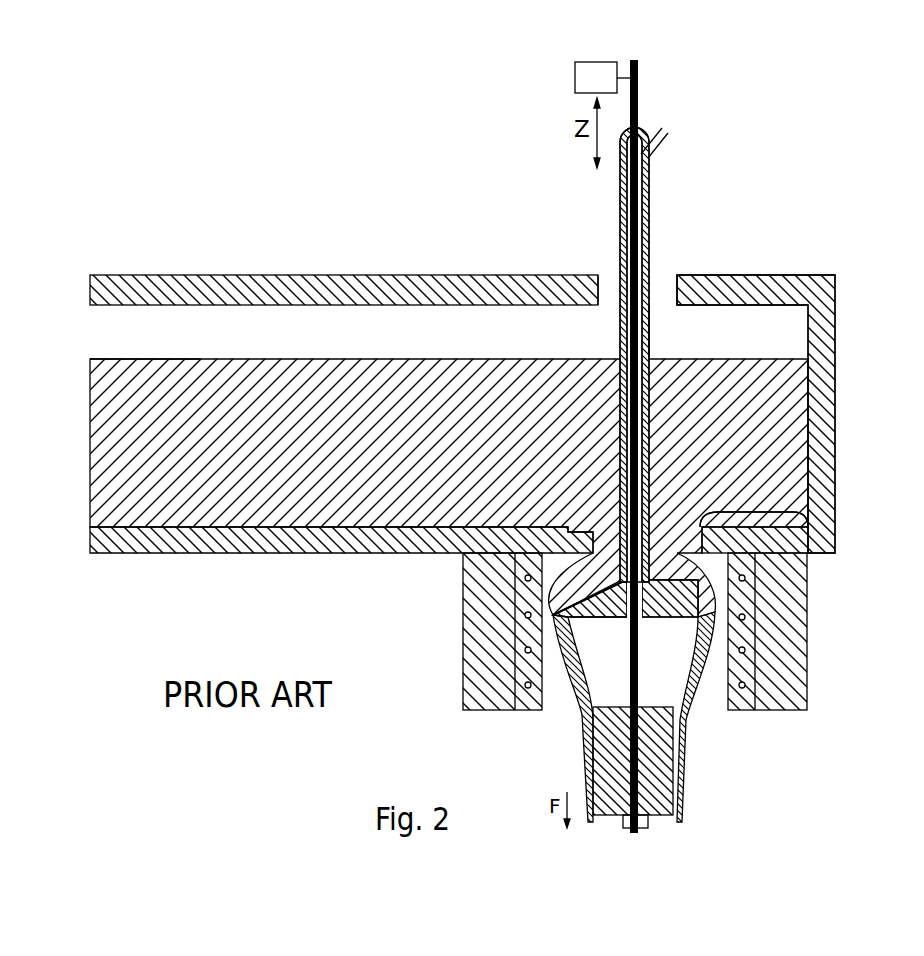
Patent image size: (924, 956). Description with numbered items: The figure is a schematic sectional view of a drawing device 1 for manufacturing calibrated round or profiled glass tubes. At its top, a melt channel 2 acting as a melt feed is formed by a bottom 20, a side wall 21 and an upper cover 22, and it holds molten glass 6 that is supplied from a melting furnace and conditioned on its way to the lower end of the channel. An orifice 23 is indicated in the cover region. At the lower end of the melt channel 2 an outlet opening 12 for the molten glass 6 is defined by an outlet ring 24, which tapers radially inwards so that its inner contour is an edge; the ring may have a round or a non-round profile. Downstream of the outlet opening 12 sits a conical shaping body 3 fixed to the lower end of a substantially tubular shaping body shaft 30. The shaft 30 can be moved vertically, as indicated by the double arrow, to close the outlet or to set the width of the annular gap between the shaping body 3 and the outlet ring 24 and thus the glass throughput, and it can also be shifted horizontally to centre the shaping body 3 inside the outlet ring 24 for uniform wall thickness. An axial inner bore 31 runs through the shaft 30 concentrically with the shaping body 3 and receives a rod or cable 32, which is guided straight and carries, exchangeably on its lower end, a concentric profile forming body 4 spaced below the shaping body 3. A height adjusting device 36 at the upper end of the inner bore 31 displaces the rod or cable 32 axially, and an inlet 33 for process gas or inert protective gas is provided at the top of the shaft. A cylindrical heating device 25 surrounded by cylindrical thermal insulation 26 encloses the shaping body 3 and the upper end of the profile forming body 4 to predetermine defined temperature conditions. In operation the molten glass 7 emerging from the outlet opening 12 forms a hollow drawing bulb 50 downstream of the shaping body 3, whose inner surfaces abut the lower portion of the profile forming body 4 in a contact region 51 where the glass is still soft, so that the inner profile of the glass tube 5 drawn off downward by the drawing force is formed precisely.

The drawing device 1 is at (842, 192).
The melt channel 2 is at (107, 349).
The shaping body 3 is at (703, 610).
The profile forming body 4 is at (683, 742).
The glass tube 5 is at (683, 822).
The molten glass 6 is at (212, 446).
The emerging molten glass 7 is at (570, 582).
The outlet opening 12 is at (835, 513).
The bottom 20 is at (205, 553).
The side wall 21 is at (835, 387).
The upper cover 22 is at (238, 288).
The orifice 23 is at (665, 290).
The outlet ring 24 is at (773, 555).
The heating device 25 is at (520, 665).
The thermal insulation 26 is at (467, 623).
The shaping body shaft 30 is at (649, 347).
The inner bore 31 is at (649, 181).
The rod or cable 32 is at (638, 73).
The inlet for process gas 33 is at (667, 136).
The height adjusting device 36 is at (575, 74).
The drawing bulb 50 is at (703, 663).
The contact region 51 is at (683, 783).